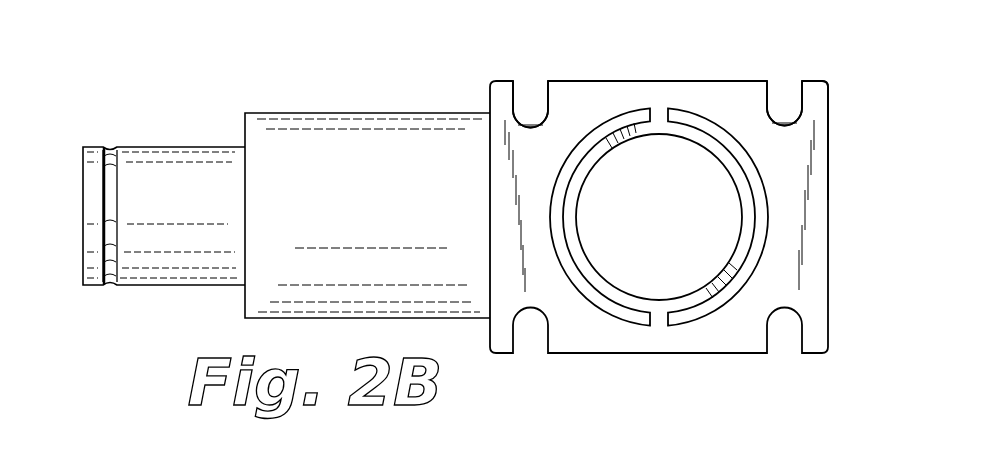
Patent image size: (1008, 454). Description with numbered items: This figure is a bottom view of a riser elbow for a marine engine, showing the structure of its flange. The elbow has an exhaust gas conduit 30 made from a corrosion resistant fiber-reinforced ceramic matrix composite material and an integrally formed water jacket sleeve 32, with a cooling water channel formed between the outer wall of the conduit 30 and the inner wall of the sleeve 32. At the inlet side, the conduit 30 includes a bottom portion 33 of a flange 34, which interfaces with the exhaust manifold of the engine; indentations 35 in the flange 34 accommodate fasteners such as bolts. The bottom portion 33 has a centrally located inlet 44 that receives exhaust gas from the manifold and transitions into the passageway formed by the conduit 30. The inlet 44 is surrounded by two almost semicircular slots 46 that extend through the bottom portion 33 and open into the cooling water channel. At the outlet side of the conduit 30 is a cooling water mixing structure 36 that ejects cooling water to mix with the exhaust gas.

The exhaust gas conduit 30 is at (167, 157).
The water jacket sleeve 32 is at (335, 122).
The bottom portion of flange 33 is at (820, 192).
The flange 34 is at (843, 75).
The indentations 35 is at (527, 78).
The cooling water mixing structure 36 is at (104, 140).
The inlet 44 is at (657, 243).
The slots 46 is at (680, 113).